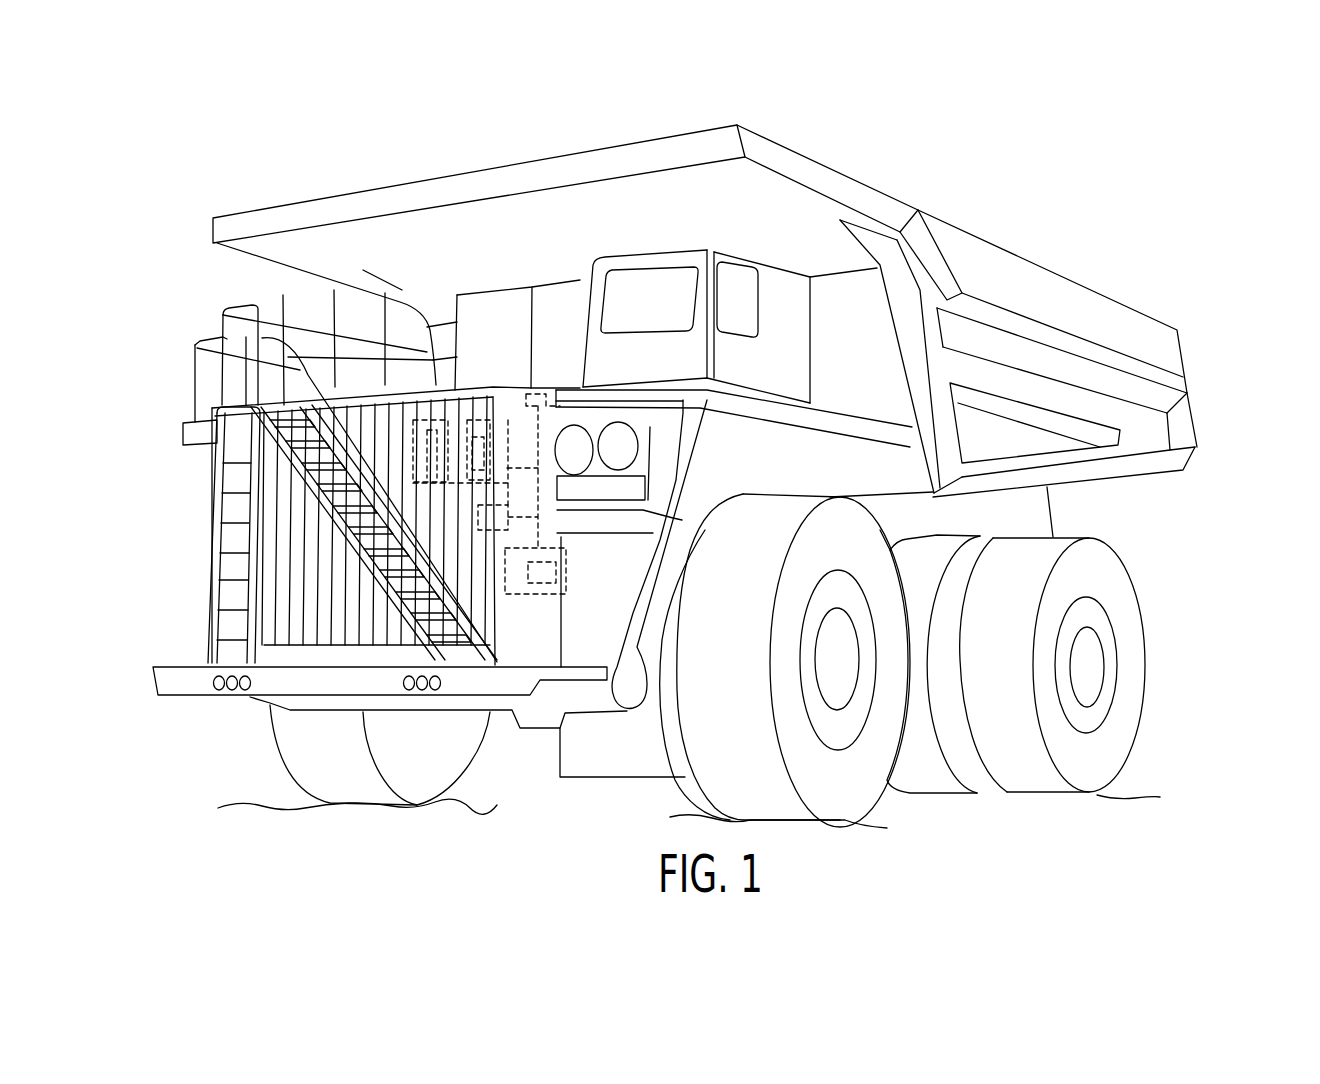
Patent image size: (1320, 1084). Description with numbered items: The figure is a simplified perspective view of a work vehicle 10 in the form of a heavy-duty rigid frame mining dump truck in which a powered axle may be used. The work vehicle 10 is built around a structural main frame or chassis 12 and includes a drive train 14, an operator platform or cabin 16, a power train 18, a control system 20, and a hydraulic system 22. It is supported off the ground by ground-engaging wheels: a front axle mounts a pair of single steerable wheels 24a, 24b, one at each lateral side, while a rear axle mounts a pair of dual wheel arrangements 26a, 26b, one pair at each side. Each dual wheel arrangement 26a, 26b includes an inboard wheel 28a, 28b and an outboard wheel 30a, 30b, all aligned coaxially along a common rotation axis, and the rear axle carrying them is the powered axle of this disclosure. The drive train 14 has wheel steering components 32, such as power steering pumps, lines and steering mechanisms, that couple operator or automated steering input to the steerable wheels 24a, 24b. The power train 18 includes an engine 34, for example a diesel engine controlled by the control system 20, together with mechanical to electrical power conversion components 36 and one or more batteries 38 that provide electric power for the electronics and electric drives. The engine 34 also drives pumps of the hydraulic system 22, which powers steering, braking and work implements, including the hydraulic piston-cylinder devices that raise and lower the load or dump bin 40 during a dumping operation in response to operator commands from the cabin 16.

The work vehicle 10 is at (1127, 150).
The main frame or chassis 12 is at (1042, 514).
The drive train 14 is at (572, 572).
The operator platform or cabin 16 is at (793, 328).
The power train 18 is at (455, 418).
The control system 20 is at (542, 392).
The hydraulic system 22 is at (478, 528).
The steerable wheel 24a is at (403, 742).
The steerable wheel 24b is at (840, 700).
The dual wheel arrangement 26a is at (592, 795).
The dual wheel arrangement 26b is at (1153, 582).
The inboard wheel 28a is at (672, 710).
The inboard wheel 28b is at (953, 720).
The outboard wheel 30a is at (648, 705).
The outboard wheel 30b is at (1093, 720).
The wheel steering components 32 is at (545, 597).
The engine 34 is at (433, 395).
The mechanical to electrical power conversion components 36 is at (470, 486).
The batteries 38 is at (484, 418).
The load or dump bin 40 is at (1105, 318).